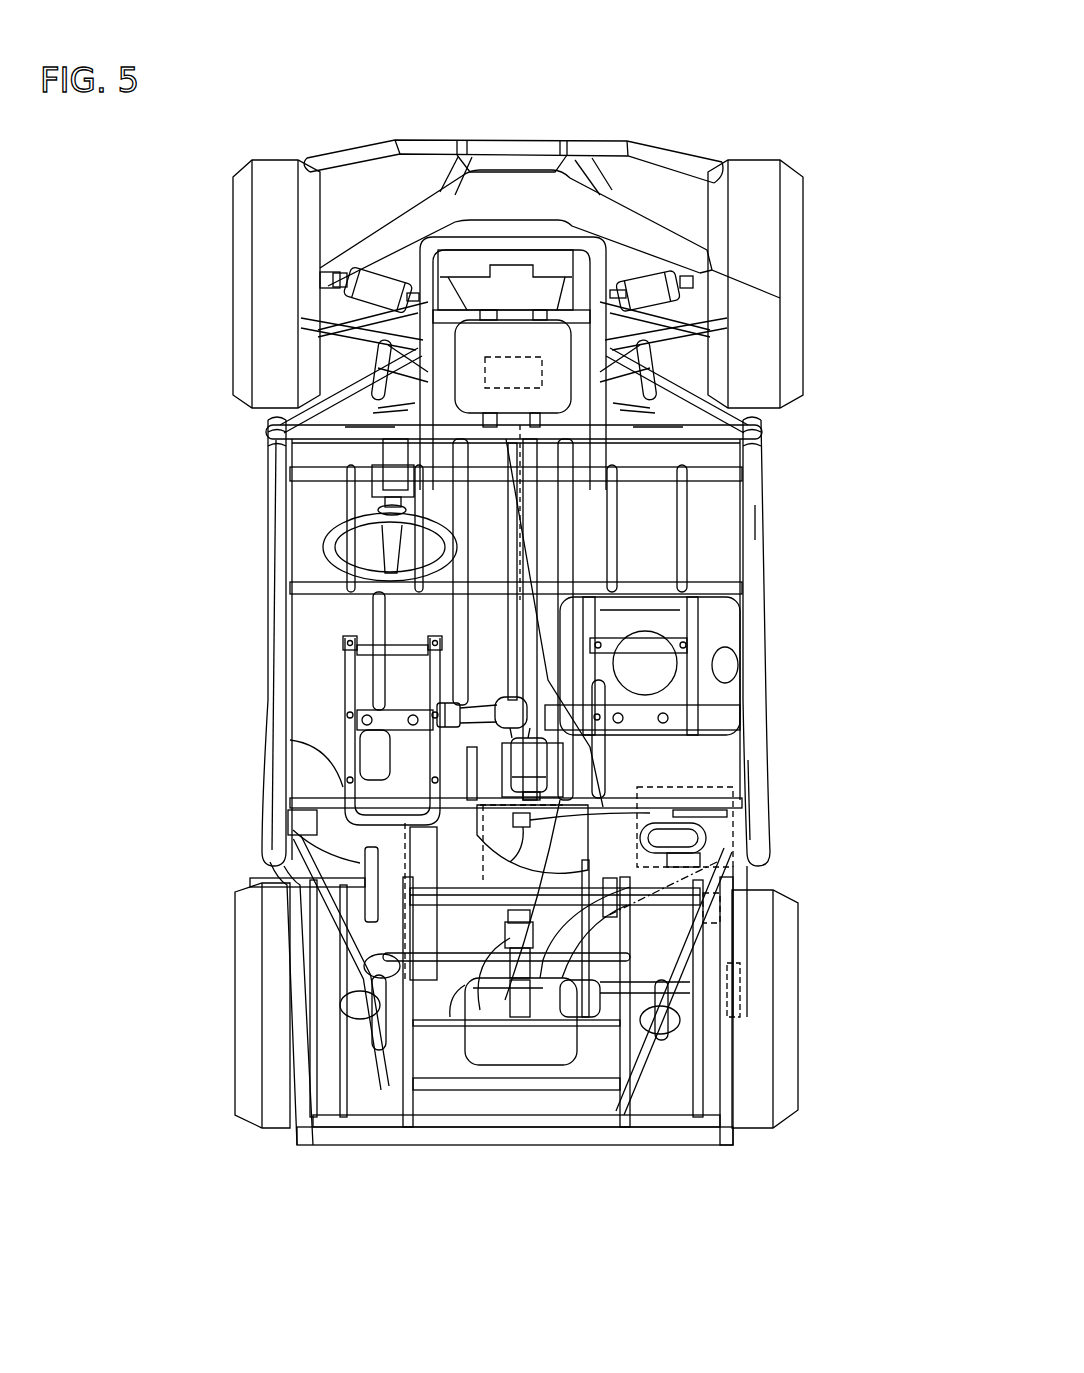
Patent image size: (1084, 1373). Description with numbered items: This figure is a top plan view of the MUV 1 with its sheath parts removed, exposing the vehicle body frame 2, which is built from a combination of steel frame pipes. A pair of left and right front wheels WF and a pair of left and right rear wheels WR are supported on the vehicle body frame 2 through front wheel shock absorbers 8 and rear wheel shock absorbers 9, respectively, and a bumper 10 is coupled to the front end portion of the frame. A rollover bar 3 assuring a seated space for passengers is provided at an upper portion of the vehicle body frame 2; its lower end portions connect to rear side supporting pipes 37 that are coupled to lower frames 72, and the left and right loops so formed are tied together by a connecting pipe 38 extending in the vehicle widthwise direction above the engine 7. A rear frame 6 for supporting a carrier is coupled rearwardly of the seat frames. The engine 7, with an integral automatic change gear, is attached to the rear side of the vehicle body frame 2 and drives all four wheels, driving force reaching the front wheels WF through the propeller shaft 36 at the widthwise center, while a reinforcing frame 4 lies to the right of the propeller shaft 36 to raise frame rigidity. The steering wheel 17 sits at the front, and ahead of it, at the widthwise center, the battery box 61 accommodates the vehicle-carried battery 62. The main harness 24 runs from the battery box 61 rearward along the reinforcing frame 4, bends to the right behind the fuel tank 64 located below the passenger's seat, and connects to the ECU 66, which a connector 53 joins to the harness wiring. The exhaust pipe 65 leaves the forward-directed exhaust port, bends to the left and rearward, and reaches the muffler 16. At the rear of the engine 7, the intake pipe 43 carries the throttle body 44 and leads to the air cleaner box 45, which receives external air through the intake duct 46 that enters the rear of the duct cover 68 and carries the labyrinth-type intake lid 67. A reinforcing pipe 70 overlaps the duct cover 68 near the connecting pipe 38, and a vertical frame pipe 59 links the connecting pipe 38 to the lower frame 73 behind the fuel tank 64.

The MUV 1 is at (233, 90).
The vehicle body frame 2 is at (762, 526).
The rollover bar 3 is at (745, 727).
The reinforcing frame 4 is at (533, 622).
The rear frame 6 is at (300, 1030).
The engine 7 is at (475, 843).
The front wheel shock absorber 8 is at (373, 272).
The rear wheel shock absorber 9 is at (358, 1035).
The bumper 10 is at (513, 142).
The muffler 16 is at (372, 855).
The steering wheel 17 is at (338, 533).
The main harness 24 is at (553, 547).
The propeller shaft 36 is at (510, 668).
The rear side supporting pipe 37 is at (775, 848).
The connecting pipe 38 is at (332, 790).
The intake pipe 43 is at (487, 1000).
The throttle body 44 is at (465, 1000).
The air cleaner box 45 is at (530, 1005).
The intake duct 46 is at (640, 895).
The connector 53 is at (515, 825).
The frame pipe 59 is at (617, 773).
The battery box 61 is at (552, 355).
The vehicle-carried battery 62 is at (543, 384).
The fuel tank 64 is at (724, 622).
The exhaust pipe 65 is at (640, 702).
The ECU 66 is at (743, 805).
The intake lid 67 is at (693, 840).
The duct cover 68 is at (740, 903).
The reinforcing pipe 70 is at (700, 907).
The lower frame 72 is at (765, 810).
The lower frame 73 is at (672, 740).
The front wheel WF is at (240, 215).
The rear wheel WR is at (248, 1072).